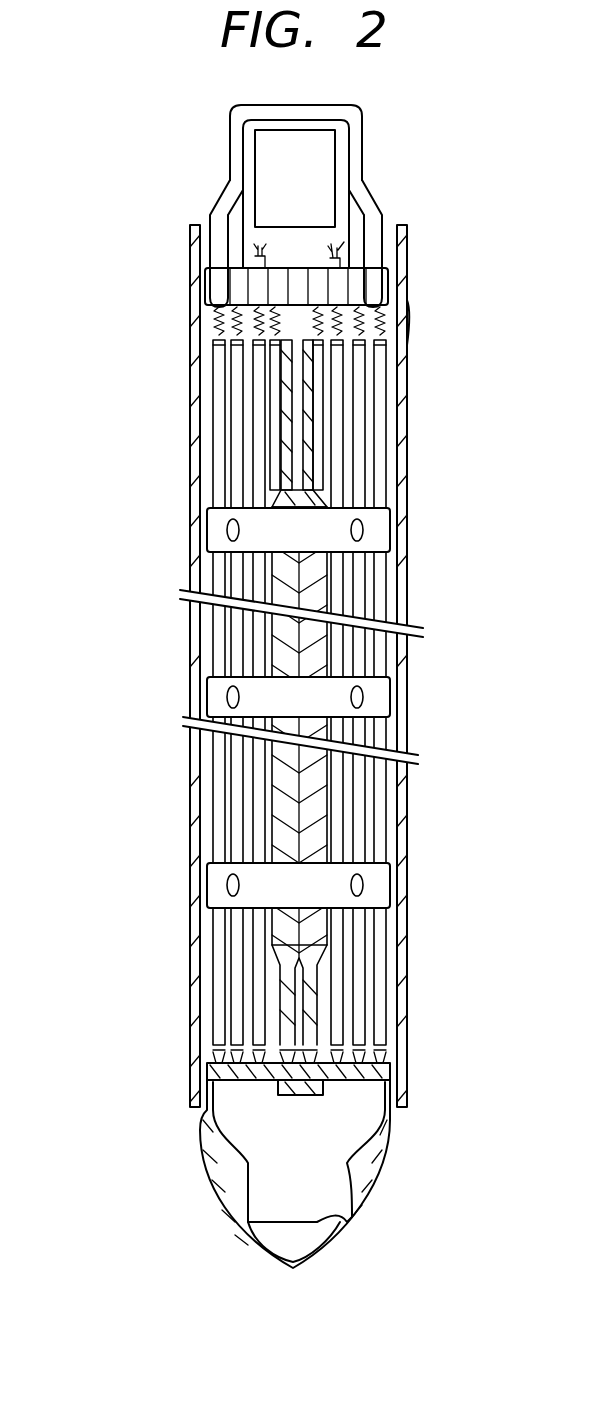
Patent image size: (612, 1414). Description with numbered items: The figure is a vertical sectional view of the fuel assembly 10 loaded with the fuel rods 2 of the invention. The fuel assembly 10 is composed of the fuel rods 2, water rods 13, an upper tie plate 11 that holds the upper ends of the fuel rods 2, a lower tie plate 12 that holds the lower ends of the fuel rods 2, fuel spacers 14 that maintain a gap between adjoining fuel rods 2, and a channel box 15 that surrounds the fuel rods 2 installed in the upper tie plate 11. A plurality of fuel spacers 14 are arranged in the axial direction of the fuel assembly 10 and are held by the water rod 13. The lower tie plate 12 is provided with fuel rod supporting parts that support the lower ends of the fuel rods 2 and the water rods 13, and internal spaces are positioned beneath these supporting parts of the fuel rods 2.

The fuel assembly 10 is at (186, 622).
The upper tie plate 11 is at (360, 118).
The fuel rod 2 is at (382, 478).
The water rod 13 is at (313, 575).
The fuel spacer 14 is at (382, 893).
The channel box 15 is at (190, 832).
The lower tie plate 12 is at (338, 1131).